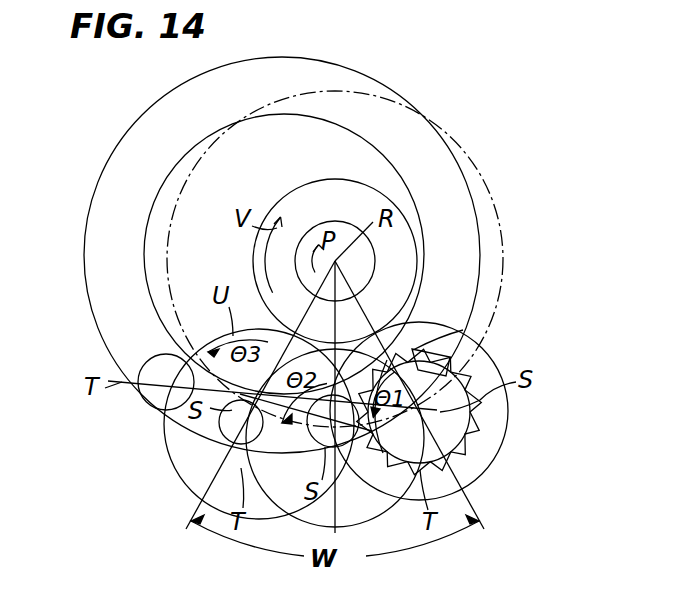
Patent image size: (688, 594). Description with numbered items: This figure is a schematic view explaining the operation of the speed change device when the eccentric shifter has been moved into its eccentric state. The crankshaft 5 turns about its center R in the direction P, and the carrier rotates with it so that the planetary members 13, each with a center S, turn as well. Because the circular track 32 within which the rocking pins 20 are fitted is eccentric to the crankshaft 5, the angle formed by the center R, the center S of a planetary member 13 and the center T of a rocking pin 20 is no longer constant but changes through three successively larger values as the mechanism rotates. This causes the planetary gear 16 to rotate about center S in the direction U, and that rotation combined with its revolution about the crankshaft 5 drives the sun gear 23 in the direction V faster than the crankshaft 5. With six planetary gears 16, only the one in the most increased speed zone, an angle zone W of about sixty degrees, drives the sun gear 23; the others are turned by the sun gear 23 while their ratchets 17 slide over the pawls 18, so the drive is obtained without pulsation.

The crankshaft 5 is at (378, 257).
The planetary member 13 is at (467, 417).
The planetary gear 16 is at (166, 438).
The ratchet 17 is at (457, 360).
The pawl 18 is at (463, 330).
The rocking pin 20 is at (148, 358).
The sun gear 23 is at (367, 178).
The circular track 32 is at (91, 222).